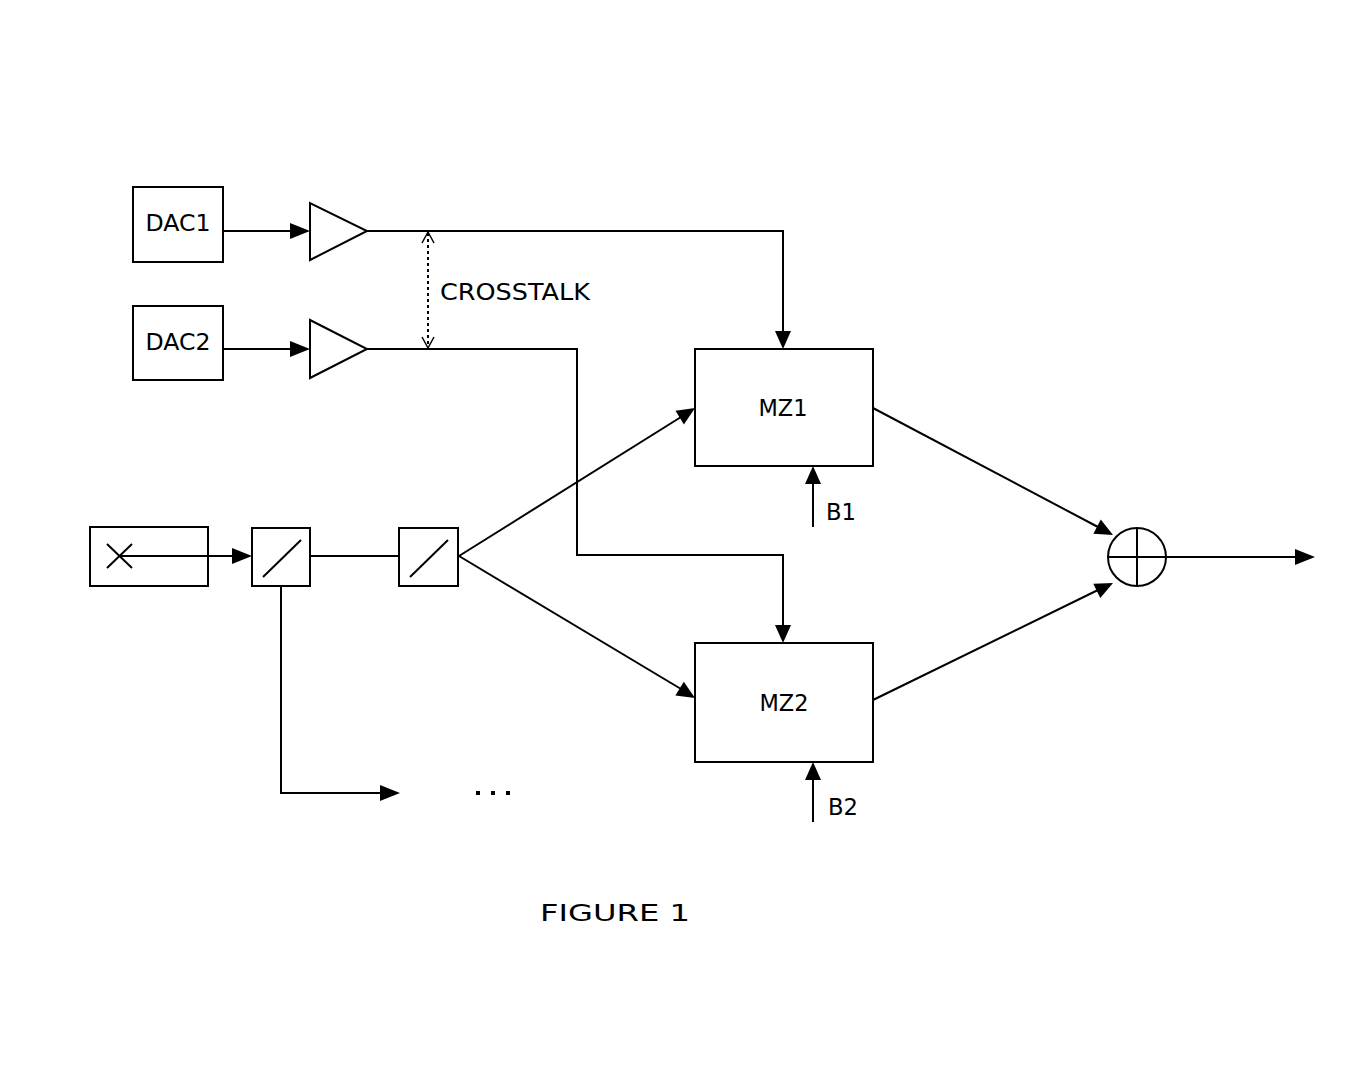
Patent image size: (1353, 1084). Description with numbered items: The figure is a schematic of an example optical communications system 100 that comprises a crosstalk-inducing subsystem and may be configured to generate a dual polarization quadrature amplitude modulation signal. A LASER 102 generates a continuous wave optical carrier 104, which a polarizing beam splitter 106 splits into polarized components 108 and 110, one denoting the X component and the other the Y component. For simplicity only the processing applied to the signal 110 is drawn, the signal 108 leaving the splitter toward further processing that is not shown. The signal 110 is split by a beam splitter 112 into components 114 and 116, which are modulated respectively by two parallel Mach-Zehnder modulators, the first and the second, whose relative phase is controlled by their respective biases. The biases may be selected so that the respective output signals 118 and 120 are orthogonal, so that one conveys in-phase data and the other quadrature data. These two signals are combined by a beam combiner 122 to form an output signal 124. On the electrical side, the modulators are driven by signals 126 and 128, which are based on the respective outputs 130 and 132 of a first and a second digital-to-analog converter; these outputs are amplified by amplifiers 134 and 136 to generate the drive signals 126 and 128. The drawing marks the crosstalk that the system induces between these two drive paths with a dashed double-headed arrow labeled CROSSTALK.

The optical communications system 100 is at (302, 107).
The LASER 102 is at (127, 586).
The continuous wave optical carrier 104 is at (223, 552).
The polarizing beam splitter 106 is at (281, 527).
The polarized component 108 is at (309, 795).
The polarized component 110 is at (353, 552).
The beam splitter 112 is at (428, 527).
The component 114 is at (553, 493).
The component 116 is at (557, 615).
The output signal 118 is at (912, 427).
The output signal 120 is at (913, 678).
The beam combiner 122 is at (1137, 527).
The output signal 124 is at (1210, 560).
The drive signal 126 is at (723, 229).
The drive signal 128 is at (721, 556).
The DAC output 130 is at (255, 229).
The DAC output 132 is at (255, 347).
The amplifier 134 is at (343, 230).
The amplifier 136 is at (343, 348).